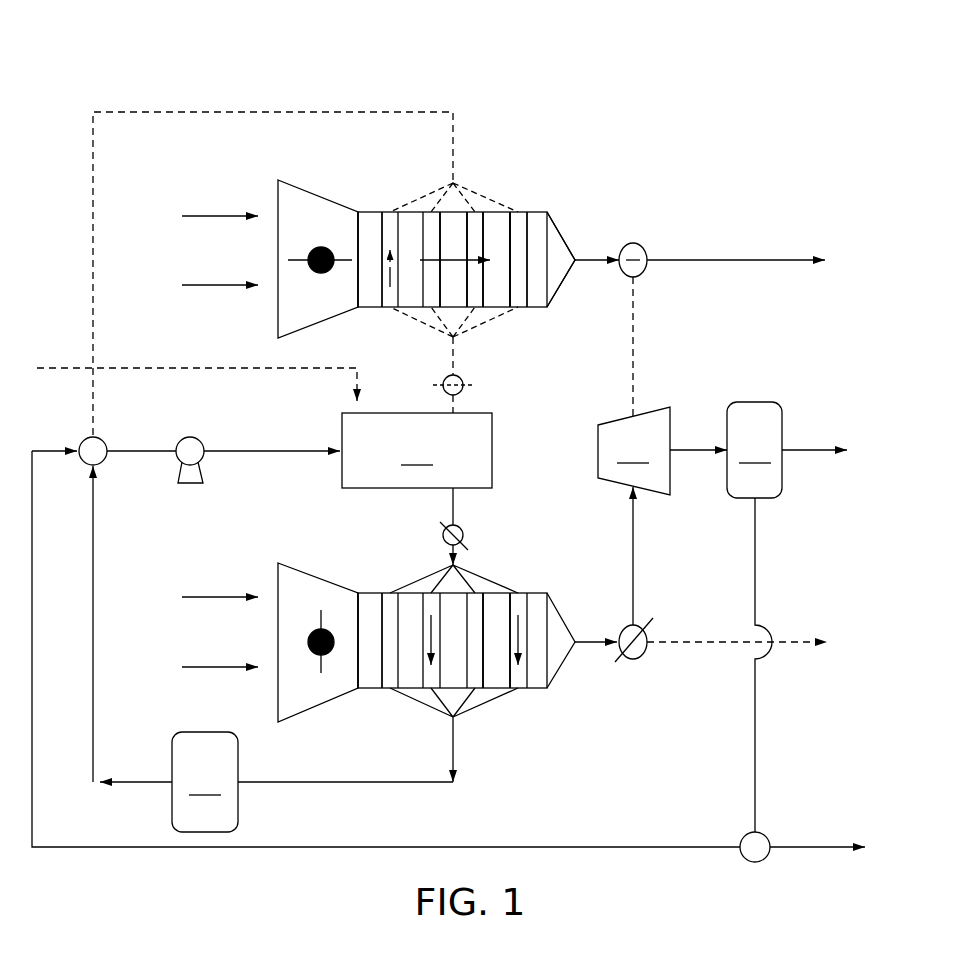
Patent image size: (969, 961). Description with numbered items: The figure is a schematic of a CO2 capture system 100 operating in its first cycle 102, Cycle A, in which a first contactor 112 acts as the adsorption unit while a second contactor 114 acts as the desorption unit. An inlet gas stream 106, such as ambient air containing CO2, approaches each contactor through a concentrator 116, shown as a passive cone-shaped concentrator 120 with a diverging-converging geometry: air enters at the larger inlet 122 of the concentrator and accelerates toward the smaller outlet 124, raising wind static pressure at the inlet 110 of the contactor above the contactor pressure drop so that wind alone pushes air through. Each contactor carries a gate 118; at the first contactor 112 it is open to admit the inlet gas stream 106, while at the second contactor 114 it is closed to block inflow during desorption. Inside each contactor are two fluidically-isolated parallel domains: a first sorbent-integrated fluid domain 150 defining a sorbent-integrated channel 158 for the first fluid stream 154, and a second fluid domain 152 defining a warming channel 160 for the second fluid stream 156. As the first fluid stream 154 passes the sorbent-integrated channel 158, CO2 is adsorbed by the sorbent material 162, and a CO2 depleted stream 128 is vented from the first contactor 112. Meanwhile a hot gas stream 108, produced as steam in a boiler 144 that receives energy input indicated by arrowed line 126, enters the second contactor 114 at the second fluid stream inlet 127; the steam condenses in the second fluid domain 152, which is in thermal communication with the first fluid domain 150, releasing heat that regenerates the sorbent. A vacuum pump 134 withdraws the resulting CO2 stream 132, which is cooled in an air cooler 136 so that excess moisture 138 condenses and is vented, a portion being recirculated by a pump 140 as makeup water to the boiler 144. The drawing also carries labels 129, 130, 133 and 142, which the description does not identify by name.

The CO2 capture system 100 is at (485, 63).
The first cycle 102 is at (737, 146).
The inlet gas stream 106 is at (212, 283).
The hot gas stream 108 is at (265, 450).
The inlet 110 is at (358, 214).
The first contactor 112 is at (562, 184).
The second contactor 114 is at (497, 566).
The concentrator 116 is at (278, 186).
The gate 118 is at (320, 246).
The cone-shaped concentrator 120 is at (300, 333).
The inlet of the concentrator 122 is at (278, 318).
The outlet of the concentrator 124 is at (368, 293).
The arrowed line 126 is at (127, 368).
The second fluid stream inlet 127 is at (420, 562).
The CO2 depleted stream 128 is at (765, 258).
The outlet valve 129 is at (577, 657).
The liquid outlet stream 130 is at (462, 770).
The CO2 stream 132 is at (812, 448).
The outlet cone 133 is at (577, 272).
The vacuum pump 134 is at (662, 516).
The air cooler 136 is at (754, 450).
The excess moisture 138 is at (756, 712).
The pump 140 is at (185, 436).
The separator 142 is at (165, 649).
The boiler 144 is at (417, 469).
The first fluidically-isolated, sorbent-integrated fluid domain 150 is at (498, 225).
The second fluidically-isolated fluid domain 152 is at (518, 305).
The first fluid stream 154 is at (460, 225).
The second fluid stream 156 is at (530, 690).
The sorbent-integrated channel 158 is at (496, 259).
The warming channel 160 is at (496, 640).
The sorbent material 162 is at (458, 300).